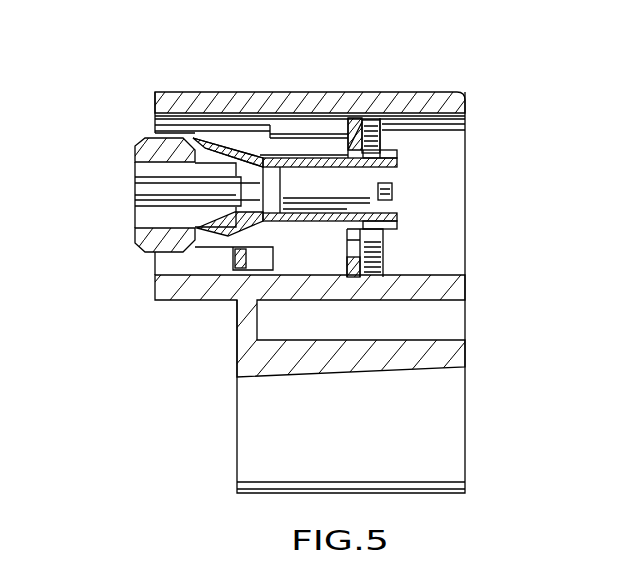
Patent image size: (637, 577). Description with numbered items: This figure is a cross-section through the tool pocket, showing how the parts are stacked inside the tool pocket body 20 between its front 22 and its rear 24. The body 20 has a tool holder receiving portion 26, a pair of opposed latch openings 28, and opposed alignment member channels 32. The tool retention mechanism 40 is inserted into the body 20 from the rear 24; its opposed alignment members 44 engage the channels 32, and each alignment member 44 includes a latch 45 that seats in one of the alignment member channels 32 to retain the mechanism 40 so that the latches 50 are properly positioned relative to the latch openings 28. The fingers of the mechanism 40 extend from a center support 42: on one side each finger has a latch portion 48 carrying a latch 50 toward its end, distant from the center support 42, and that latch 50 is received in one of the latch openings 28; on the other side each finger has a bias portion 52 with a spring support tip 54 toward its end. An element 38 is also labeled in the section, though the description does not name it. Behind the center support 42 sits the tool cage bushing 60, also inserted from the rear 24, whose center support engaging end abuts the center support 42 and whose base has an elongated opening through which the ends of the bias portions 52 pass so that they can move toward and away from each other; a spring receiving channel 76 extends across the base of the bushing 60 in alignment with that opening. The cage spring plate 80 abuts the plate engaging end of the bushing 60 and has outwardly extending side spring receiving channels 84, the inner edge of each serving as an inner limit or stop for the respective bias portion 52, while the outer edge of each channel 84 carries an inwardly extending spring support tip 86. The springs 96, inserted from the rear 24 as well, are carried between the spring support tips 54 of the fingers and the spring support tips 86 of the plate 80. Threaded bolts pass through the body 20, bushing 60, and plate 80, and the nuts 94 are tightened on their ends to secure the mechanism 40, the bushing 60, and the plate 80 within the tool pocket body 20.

The tool pocket body 20 is at (458, 385).
The front 22 is at (137, 140).
The rear 24 is at (458, 98).
The tool holder receiving portion 26 is at (173, 262).
The latch openings 28 is at (203, 242).
The alignment member channels 32 is at (195, 167).
The sleeve flange 38 is at (403, 177).
The tool retention mechanism 40 is at (260, 158).
The center support 42 is at (300, 150).
The alignment members 44 is at (235, 193).
The latch 45 is at (200, 180).
The latch portion 48 is at (216, 142).
The latches 50 is at (210, 136).
The bias portion 52 is at (305, 165).
The spring support tip 54 is at (380, 148).
The tool cage bushing 60 is at (395, 206).
The spring receiving channel 76 is at (359, 265).
The cage spring plate 80 is at (370, 127).
The side spring receiving channels 84 is at (381, 256).
The spring support tip 86 is at (373, 120).
The nuts 94 is at (392, 193).
The springs 96 is at (380, 243).